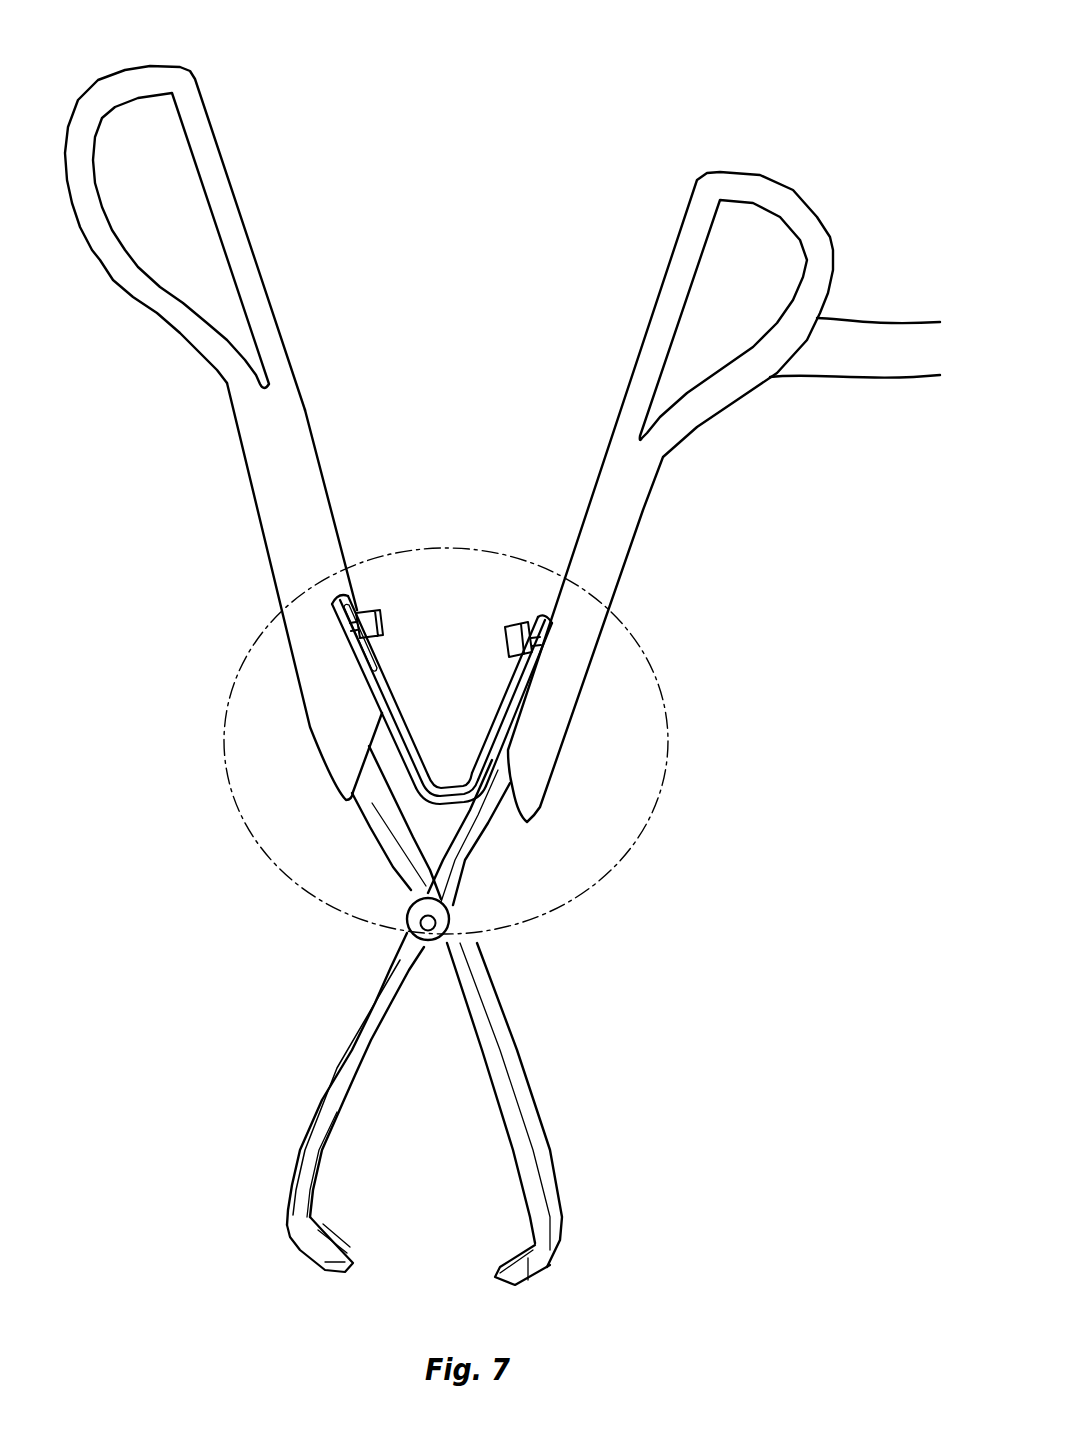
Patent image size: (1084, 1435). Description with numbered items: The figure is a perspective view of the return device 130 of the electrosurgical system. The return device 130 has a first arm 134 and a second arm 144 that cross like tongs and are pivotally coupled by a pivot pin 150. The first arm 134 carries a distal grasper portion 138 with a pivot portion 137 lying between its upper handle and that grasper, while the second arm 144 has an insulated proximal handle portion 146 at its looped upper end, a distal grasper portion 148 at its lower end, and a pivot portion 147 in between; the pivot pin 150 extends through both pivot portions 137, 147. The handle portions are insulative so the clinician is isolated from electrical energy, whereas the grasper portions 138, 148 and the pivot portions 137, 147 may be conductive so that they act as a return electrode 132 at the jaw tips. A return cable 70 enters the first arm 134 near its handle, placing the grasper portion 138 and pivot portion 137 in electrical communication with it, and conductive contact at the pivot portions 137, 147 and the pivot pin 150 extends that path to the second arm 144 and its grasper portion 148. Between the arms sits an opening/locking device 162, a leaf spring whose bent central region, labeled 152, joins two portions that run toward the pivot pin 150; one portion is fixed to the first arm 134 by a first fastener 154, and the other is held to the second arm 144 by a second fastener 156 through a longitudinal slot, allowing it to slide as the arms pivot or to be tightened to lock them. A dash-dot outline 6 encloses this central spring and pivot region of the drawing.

The return device 130 is at (451, 36).
The detail region 6 is at (668, 708).
The proximal handle portion 146 is at (242, 229).
The second arm 144 is at (268, 587).
The first arm 134 is at (641, 547).
The return cable 70 is at (886, 320).
The first fastener 154 is at (466, 704).
The second fastener 156 is at (386, 625).
The bend of spring clip 152 is at (457, 770).
The opening/locking device 162 is at (477, 814).
The pivot portion 147 is at (450, 866).
The pivot pin 150 is at (453, 910).
The pivot portion 137 is at (420, 924).
The distal grasper portion 138 is at (300, 1158).
The distal grasper portion 148 is at (556, 1181).
The return electrode 132 is at (496, 1272).